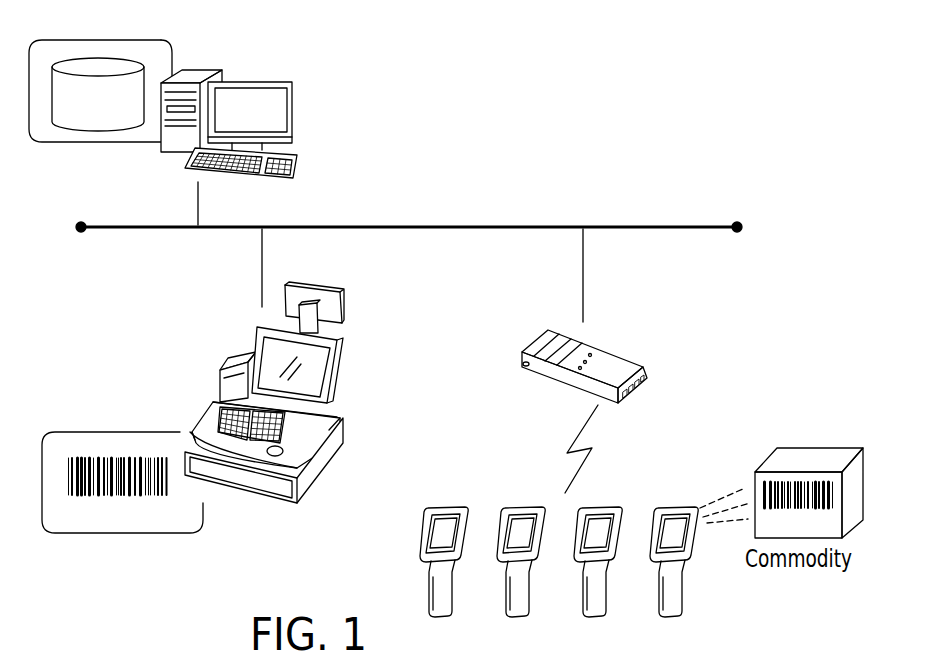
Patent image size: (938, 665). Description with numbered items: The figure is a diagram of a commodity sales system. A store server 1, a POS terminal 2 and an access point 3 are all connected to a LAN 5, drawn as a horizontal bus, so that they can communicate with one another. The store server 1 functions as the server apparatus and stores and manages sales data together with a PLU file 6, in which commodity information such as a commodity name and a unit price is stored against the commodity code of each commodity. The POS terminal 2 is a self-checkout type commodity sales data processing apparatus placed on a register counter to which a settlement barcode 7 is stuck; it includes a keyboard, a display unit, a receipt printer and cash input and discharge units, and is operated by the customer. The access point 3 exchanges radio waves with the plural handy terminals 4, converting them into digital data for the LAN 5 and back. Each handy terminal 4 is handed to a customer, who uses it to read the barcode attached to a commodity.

The store server 1 is at (267, 80).
The POS terminal 2 is at (337, 363).
The access point 3 is at (627, 357).
The handy terminal 4 is at (452, 592).
The LAN 5 is at (478, 225).
The PLU file 6 is at (107, 65).
The settlement barcode 7 is at (85, 458).